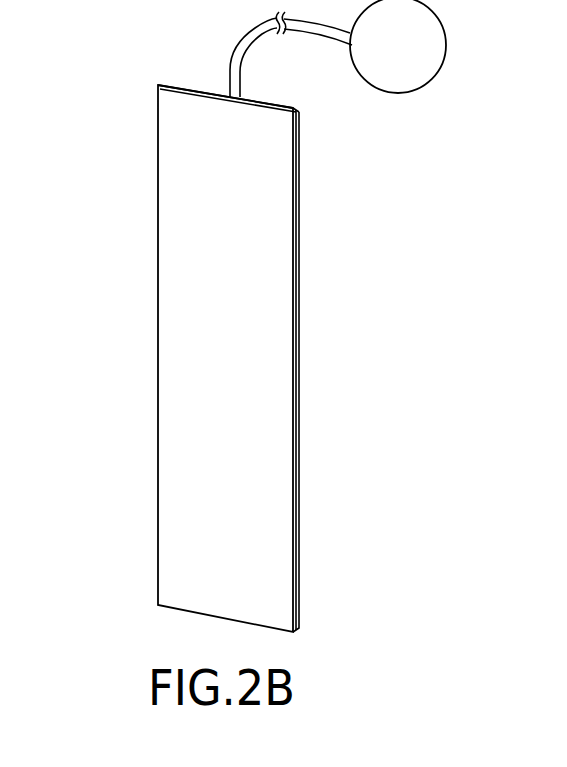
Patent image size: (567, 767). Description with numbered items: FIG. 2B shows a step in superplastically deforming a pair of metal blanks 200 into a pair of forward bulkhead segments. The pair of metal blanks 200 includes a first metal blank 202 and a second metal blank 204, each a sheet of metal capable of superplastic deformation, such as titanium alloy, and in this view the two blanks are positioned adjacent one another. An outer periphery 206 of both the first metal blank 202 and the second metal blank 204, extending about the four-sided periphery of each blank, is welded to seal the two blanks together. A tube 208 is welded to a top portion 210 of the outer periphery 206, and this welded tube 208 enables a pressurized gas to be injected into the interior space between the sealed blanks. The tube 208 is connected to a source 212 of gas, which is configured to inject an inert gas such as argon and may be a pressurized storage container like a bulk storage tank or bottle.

The pair of metal blanks 200 is at (143, 190).
The first metal blank 202 is at (180, 446).
The second metal blank 204 is at (294, 421).
The outer periphery 206 is at (294, 302).
The tube 208 is at (249, 43).
The top portion 210 is at (182, 85).
The source 212 is at (415, 76).